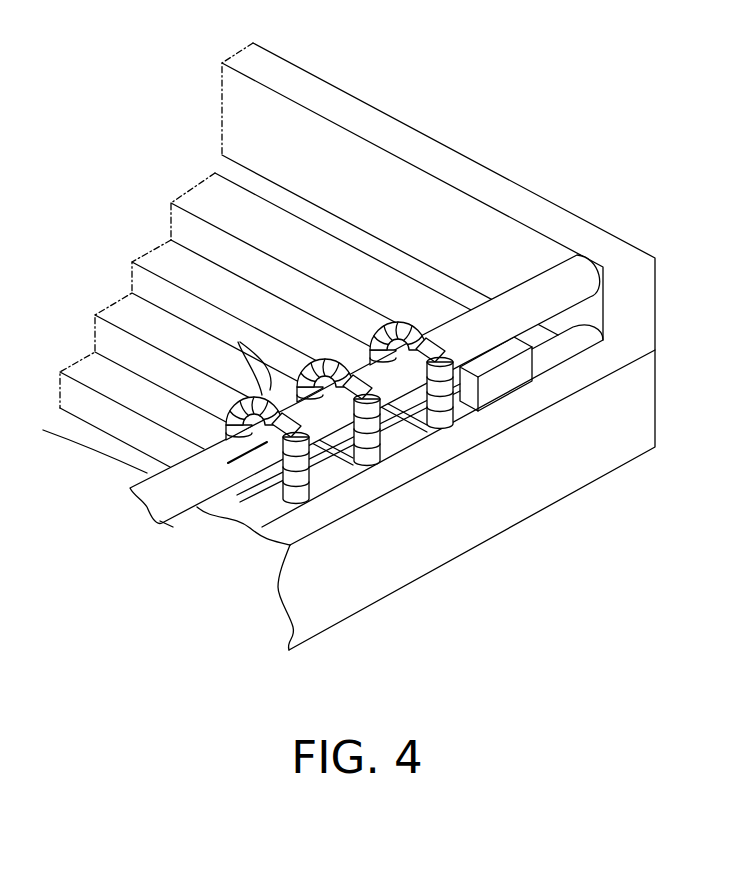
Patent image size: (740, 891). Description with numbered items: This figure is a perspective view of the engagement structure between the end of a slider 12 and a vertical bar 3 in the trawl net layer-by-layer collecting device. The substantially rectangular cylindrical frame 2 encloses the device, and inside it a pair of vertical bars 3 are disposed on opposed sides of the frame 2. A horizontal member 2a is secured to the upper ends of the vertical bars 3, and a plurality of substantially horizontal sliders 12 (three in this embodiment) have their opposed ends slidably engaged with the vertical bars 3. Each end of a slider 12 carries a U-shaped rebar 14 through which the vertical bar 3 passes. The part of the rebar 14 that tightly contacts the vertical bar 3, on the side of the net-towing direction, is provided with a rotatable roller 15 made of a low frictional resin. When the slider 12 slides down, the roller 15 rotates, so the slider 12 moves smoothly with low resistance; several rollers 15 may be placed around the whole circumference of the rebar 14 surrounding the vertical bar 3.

The cylindrical frame 2 is at (373, 116).
The horizontal member 2a is at (213, 200).
The slider 12 is at (162, 260).
The vertical bar 3 is at (513, 298).
The U-shaped rebar 14 is at (300, 432).
The rotatable roller 15 is at (242, 356).